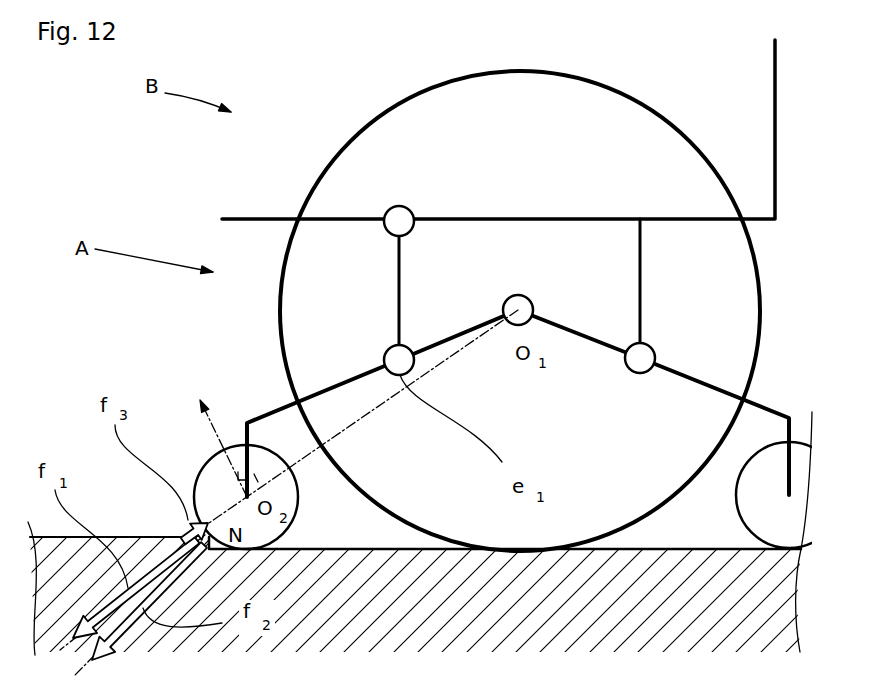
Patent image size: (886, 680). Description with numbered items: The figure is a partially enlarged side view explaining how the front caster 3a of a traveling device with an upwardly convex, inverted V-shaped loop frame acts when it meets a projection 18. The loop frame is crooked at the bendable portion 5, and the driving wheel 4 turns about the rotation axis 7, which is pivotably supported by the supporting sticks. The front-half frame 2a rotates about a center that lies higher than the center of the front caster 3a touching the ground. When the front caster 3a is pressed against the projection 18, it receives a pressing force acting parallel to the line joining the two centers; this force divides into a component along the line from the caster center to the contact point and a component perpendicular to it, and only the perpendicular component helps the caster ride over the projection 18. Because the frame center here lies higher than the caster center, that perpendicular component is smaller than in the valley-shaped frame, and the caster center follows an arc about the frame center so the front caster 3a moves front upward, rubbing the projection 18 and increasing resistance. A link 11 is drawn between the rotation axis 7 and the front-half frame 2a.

The driving wheel 4 is at (647, 107).
The rotation axis 7 is at (540, 215).
The bendable portion 5 is at (517, 295).
The link 11 is at (400, 287).
The front-half frame 2a is at (337, 387).
The front caster 3a is at (212, 460).
The projection 18 is at (228, 550).